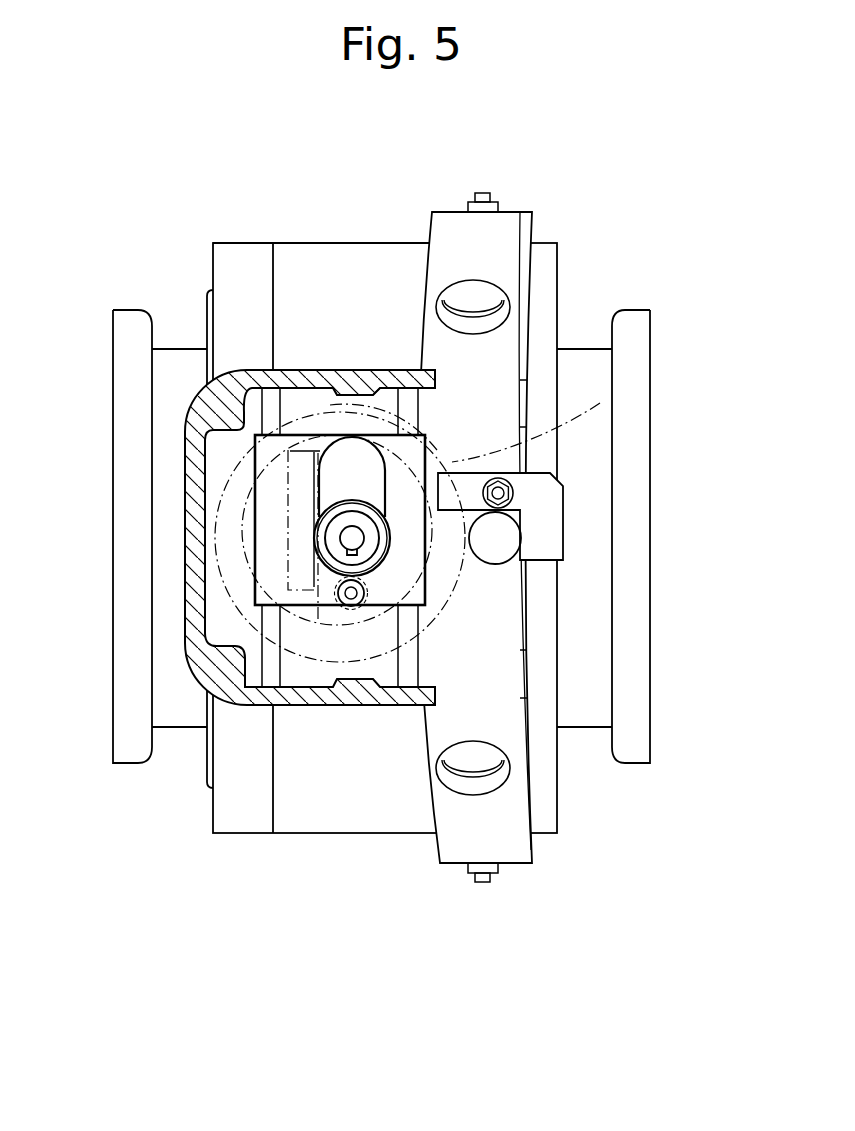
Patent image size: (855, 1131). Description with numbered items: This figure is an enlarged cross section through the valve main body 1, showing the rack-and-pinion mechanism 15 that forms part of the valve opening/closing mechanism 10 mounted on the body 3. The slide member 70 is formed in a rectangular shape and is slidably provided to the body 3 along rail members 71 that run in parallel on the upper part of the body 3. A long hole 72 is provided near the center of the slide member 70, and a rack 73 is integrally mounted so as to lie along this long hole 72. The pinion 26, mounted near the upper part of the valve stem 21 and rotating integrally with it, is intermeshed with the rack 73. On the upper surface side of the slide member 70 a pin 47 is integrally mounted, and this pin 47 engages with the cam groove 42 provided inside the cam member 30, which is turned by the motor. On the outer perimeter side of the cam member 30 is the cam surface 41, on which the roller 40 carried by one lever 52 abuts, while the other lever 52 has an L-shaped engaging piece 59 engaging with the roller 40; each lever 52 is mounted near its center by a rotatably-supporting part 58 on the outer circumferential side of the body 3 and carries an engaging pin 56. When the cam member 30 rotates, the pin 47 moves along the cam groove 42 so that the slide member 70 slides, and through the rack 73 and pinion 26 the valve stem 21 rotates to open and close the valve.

The valve main body 1 is at (338, 224).
The body 3 is at (333, 815).
The valve opening/closing mechanism 10 is at (303, 618).
The rack-and-pinion mechanism 15 is at (378, 426).
The valve stem 21 is at (332, 539).
The pinion 26 is at (342, 502).
The cam member 30 is at (345, 647).
The roller 40 is at (510, 538).
The cam surface 41 is at (600, 403).
The cam groove 42 is at (367, 593).
The pin 47 is at (424, 584).
The lever 52 is at (486, 540).
The engaging pin 56 is at (484, 193).
The rotatably-supporting part 58 is at (470, 775).
The L-shaped engaging piece 59 is at (538, 502).
The slide member 70 is at (268, 583).
The rail member 71 is at (268, 662).
The long hole 72 is at (331, 462).
The rack 73 is at (318, 620).